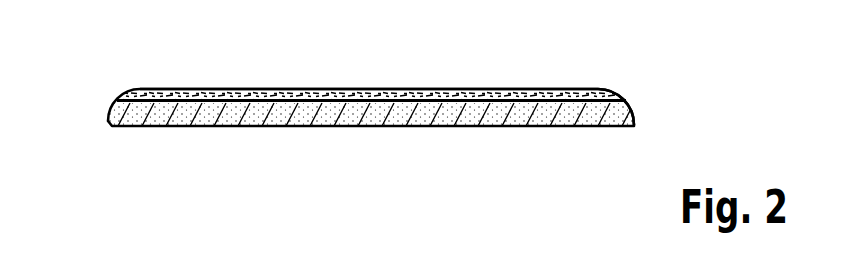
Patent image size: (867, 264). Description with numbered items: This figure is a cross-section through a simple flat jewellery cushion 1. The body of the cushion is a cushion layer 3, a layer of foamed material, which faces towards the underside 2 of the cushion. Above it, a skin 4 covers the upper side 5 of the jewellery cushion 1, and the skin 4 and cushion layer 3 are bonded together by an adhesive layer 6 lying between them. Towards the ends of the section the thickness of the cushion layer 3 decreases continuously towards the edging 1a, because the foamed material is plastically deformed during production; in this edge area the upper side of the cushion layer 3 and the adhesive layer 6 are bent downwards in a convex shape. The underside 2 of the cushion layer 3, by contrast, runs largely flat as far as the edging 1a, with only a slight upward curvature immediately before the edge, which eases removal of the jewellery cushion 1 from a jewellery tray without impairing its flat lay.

The jewellery cushion 1 is at (118, 79).
The edging 1a is at (652, 117).
The underside 2 is at (369, 128).
The cushion layer 3 is at (219, 106).
The skin 4 is at (523, 98).
The upper side 5 is at (334, 96).
The adhesive layer 6 is at (426, 100).